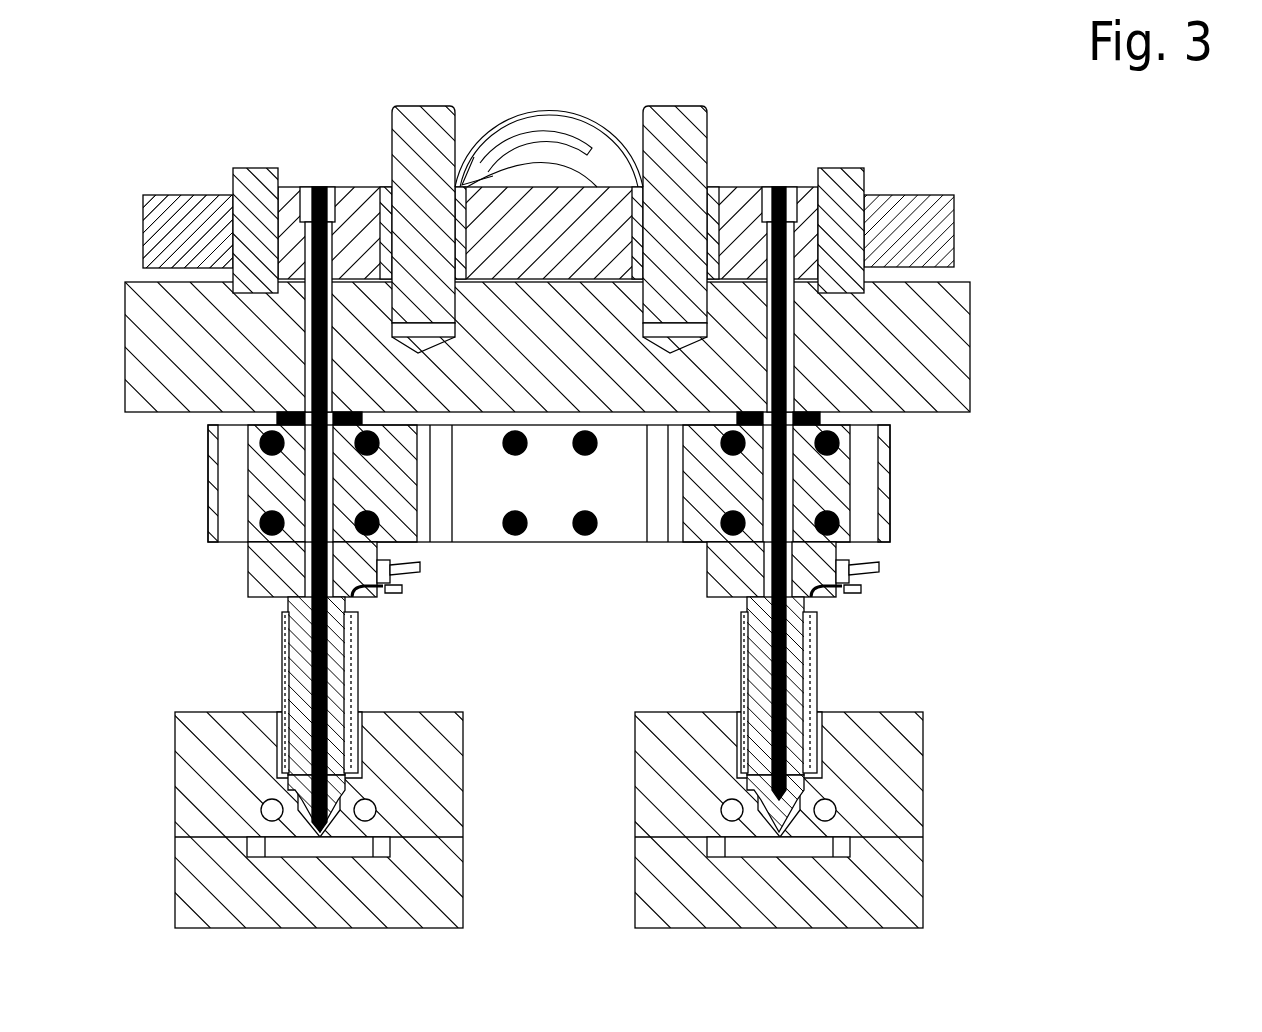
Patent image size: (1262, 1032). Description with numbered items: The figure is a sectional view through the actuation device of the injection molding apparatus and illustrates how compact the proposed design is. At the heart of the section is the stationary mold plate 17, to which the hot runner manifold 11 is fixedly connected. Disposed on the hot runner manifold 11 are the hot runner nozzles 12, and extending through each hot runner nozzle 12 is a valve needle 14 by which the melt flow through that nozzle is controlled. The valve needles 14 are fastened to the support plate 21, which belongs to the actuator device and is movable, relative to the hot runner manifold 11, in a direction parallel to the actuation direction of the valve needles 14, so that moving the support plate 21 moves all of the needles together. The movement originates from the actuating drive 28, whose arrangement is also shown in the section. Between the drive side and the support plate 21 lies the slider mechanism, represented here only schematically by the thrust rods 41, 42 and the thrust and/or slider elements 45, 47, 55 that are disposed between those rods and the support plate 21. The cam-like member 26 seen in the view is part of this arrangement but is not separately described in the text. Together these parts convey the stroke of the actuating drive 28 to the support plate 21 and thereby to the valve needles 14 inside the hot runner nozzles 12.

The hot runner manifold 11 is at (832, 497).
The hot runner nozzle 12 is at (797, 626).
The valve needle 14 is at (778, 675).
The stationary mold plate 17 is at (913, 358).
The support plate 21 is at (357, 207).
The cam tooth 26 is at (678, 172).
The actuating drive 28 is at (547, 158).
The thrust rod 41 is at (905, 215).
The thrust rod 42 is at (195, 210).
The thrust and/or slider element 45 is at (546, 164).
The thrust and/or slider element 47 is at (546, 164).
The thrust and/or slider element 55 is at (262, 195).